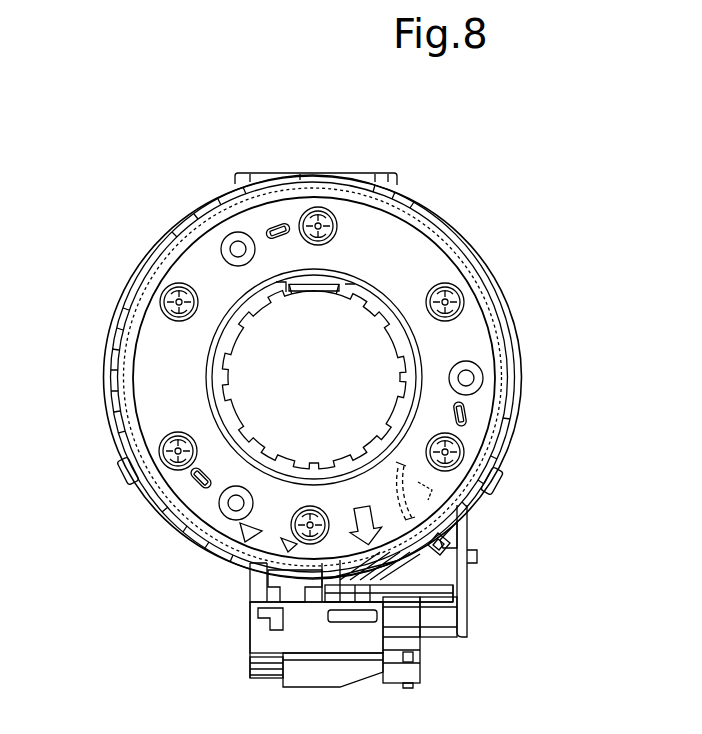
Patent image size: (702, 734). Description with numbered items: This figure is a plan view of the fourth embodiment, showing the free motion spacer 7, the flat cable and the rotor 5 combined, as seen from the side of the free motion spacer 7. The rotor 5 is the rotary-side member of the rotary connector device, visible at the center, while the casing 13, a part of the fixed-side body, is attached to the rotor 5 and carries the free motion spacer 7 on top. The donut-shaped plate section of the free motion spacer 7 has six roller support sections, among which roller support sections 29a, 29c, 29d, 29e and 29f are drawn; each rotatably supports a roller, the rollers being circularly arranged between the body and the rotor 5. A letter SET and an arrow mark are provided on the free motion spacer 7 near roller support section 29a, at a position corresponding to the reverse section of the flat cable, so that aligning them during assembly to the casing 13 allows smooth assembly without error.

The rotor 5 is at (363, 311).
The free motion spacer 7 is at (408, 247).
The casing 13 is at (521, 327).
The roller support section 29a is at (462, 453).
The roller support section 29c is at (319, 220).
The roller support section 29d is at (173, 290).
The roller support section 29e is at (165, 450).
The roller support section 29f is at (303, 540).